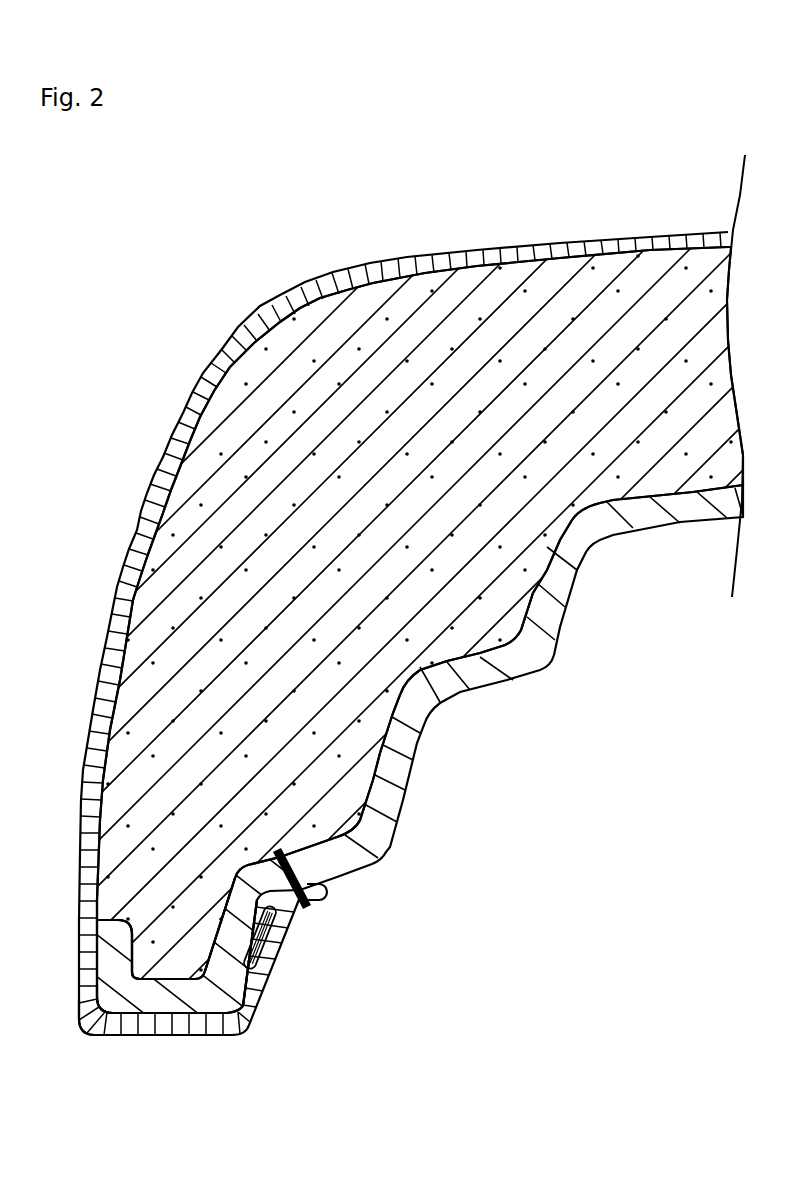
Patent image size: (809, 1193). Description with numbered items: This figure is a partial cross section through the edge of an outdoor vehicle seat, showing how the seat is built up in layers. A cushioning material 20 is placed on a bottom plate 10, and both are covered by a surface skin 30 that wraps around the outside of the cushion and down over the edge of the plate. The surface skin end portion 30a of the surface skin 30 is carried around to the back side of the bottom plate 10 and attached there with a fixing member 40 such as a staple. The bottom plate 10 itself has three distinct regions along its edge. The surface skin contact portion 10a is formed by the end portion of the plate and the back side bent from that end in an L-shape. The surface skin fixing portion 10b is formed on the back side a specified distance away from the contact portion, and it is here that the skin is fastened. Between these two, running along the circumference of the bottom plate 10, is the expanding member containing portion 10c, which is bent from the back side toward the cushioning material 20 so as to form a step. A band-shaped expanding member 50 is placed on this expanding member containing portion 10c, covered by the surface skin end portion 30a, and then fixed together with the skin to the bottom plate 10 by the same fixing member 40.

The bottom plate 10 is at (626, 540).
The surface skin contact portion 10a is at (153, 1033).
The surface skin fixing portion 10b is at (330, 880).
The expanding member containing portion 10c is at (243, 980).
The cushioning material 20 is at (566, 313).
The surface skin 30 is at (412, 257).
The surface skin end portion 30a is at (198, 1030).
The fixing member 40 is at (308, 903).
The expanding member 50 is at (268, 949).